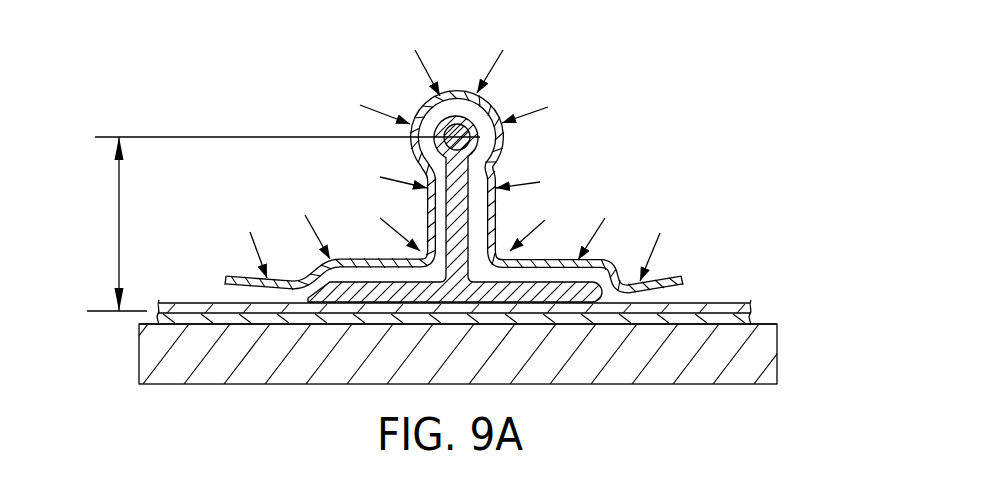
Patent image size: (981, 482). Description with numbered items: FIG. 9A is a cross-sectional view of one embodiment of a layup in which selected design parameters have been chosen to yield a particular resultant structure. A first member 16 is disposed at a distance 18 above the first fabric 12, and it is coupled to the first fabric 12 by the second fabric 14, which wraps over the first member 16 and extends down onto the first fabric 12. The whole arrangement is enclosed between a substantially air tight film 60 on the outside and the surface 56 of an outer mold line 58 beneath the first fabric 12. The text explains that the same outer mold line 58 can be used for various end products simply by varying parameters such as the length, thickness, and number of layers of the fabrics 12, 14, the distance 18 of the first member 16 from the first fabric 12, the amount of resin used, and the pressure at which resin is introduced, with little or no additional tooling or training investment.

The first fabric 12 is at (727, 302).
The second fabric 14 is at (465, 240).
The first member 16 is at (457, 137).
The distance 18 is at (119, 243).
The surface 56 is at (762, 325).
The outer mold line 58 is at (742, 367).
The substantially air tight film 60 is at (503, 152).